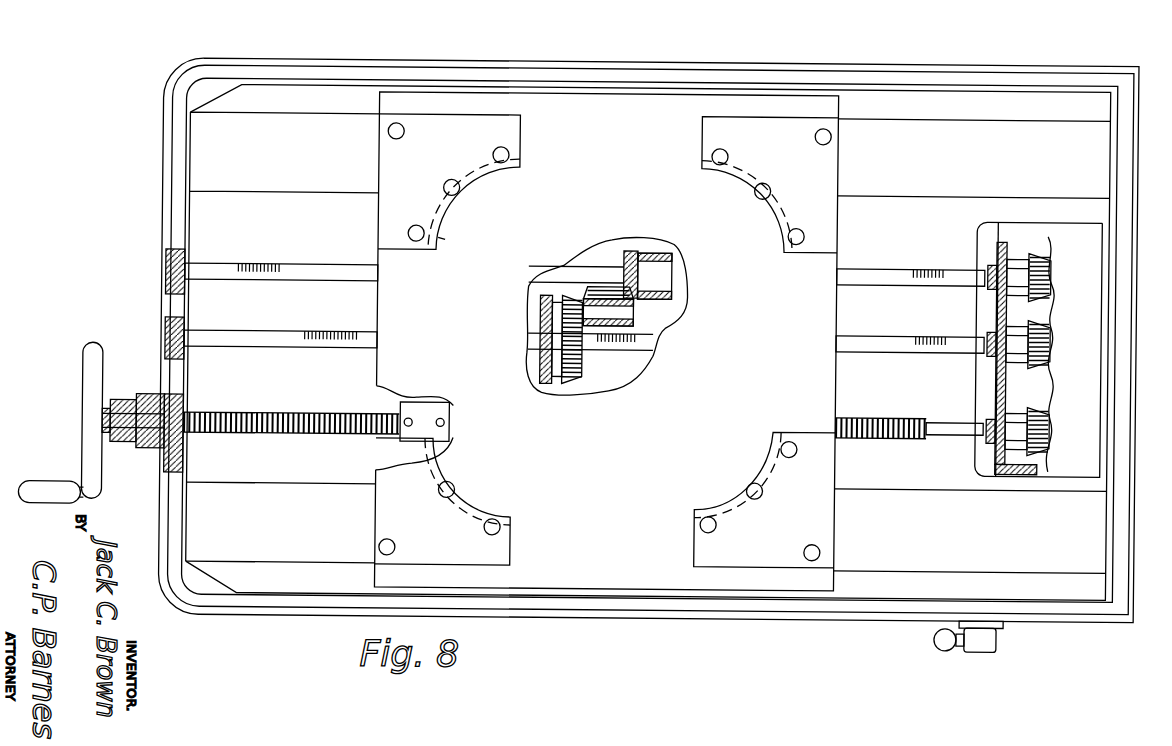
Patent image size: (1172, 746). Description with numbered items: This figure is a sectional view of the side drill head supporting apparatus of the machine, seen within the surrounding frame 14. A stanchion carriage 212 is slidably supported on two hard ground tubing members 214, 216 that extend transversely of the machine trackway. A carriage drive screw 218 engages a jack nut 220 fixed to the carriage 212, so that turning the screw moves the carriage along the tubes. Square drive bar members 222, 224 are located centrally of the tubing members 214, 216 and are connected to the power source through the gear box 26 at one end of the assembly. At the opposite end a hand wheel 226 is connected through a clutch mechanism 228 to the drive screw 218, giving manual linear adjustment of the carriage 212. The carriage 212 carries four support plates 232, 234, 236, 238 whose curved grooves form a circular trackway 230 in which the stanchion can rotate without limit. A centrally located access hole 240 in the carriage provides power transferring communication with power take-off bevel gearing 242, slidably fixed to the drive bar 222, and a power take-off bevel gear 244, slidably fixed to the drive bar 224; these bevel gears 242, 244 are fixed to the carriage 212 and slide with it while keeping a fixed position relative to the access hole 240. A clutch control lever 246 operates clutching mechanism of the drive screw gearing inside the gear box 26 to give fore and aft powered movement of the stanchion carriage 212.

The frame 14 is at (539, 65).
The gear box 26 is at (1093, 385).
The stanchion carriage 212 is at (611, 582).
The hard ground tubing member 214 is at (316, 180).
The hard ground tubing member 216 is at (223, 497).
The carriage drive screw 218 is at (270, 410).
The jack nut 220 is at (417, 428).
The square drive bar member 222 is at (873, 276).
The square drive bar member 224 is at (920, 335).
The hand wheel 226 is at (93, 387).
The clutch mechanism 228 is at (131, 436).
The circular trackway 230 is at (447, 238).
The support plate 232 is at (528, 152).
The support plate 234 is at (740, 173).
The support plate 236 is at (468, 502).
The support plate 238 is at (713, 542).
The access hole 240 is at (640, 372).
The power take-off bevel gearing 242 is at (632, 272).
The power take-off bevel gear 244 is at (567, 336).
The clutch control lever 246 is at (1003, 636).